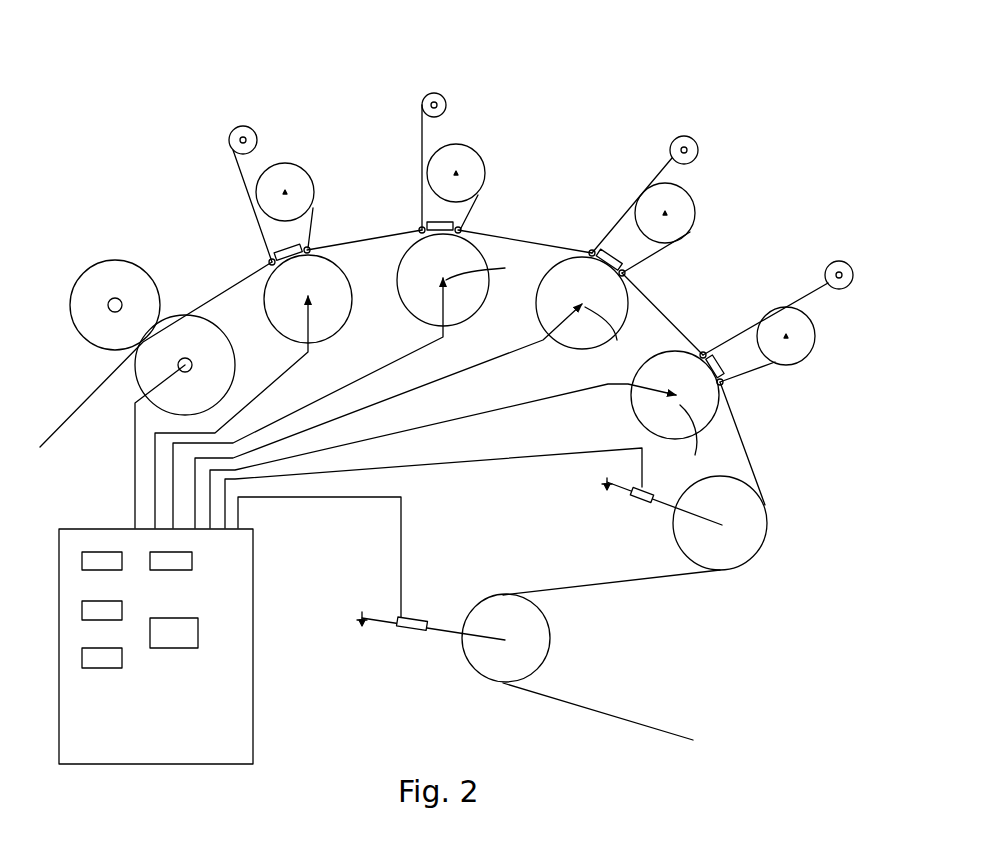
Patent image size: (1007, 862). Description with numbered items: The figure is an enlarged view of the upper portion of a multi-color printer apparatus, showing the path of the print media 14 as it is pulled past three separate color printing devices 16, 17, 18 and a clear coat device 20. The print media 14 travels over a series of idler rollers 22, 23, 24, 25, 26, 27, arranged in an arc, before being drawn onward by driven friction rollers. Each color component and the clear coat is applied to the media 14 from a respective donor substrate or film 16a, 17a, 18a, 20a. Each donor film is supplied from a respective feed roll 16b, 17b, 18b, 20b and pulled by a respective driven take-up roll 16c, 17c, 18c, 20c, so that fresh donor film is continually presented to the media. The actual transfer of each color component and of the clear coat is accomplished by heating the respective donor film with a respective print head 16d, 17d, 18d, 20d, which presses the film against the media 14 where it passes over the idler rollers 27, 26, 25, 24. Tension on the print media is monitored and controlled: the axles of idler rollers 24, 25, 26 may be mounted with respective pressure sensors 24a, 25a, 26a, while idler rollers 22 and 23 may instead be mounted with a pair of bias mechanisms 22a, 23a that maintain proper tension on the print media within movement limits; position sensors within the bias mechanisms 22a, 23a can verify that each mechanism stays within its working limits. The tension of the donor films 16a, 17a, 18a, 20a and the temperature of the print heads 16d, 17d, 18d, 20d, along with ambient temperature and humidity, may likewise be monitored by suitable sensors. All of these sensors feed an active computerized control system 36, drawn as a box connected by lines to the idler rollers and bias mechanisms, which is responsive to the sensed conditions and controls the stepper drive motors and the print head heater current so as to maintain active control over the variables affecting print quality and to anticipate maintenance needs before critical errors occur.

The print media 14 is at (558, 592).
The color printing device 16 is at (803, 388).
The donor film 16a is at (733, 387).
The feed roll 16b is at (813, 332).
The take-up roll 16c is at (846, 264).
The print head 16d is at (725, 360).
The color printing device 17 is at (718, 130).
The donor film 17a is at (643, 258).
The feed roll 17b is at (688, 222).
The take-up roll 17c is at (698, 141).
The print head 17d is at (616, 252).
The color printing device 18 is at (461, 76).
The donor film 18a is at (472, 203).
The feed roll 18b is at (474, 165).
The take-up roll 18c is at (437, 94).
The print head 18d is at (437, 226).
The clear coat device 20 is at (247, 108).
The donor film 20a is at (312, 208).
The feed roll 20b is at (292, 175).
The take-up roll 20c is at (232, 152).
The print head 20d is at (270, 250).
The idler roller 22 is at (535, 645).
The bias mechanism 22a is at (410, 633).
The idler roller 23 is at (727, 550).
The bias mechanism 23a is at (643, 501).
The idler roller 24 is at (640, 405).
The pressure sensor 24a is at (683, 441).
The idler roller 25 is at (565, 333).
The pressure sensor 25a is at (626, 329).
The idler roller 26 is at (463, 310).
The pressure sensor 26a is at (494, 268).
The idler roller 27 is at (332, 320).
The active computerized control system 36 is at (165, 748).